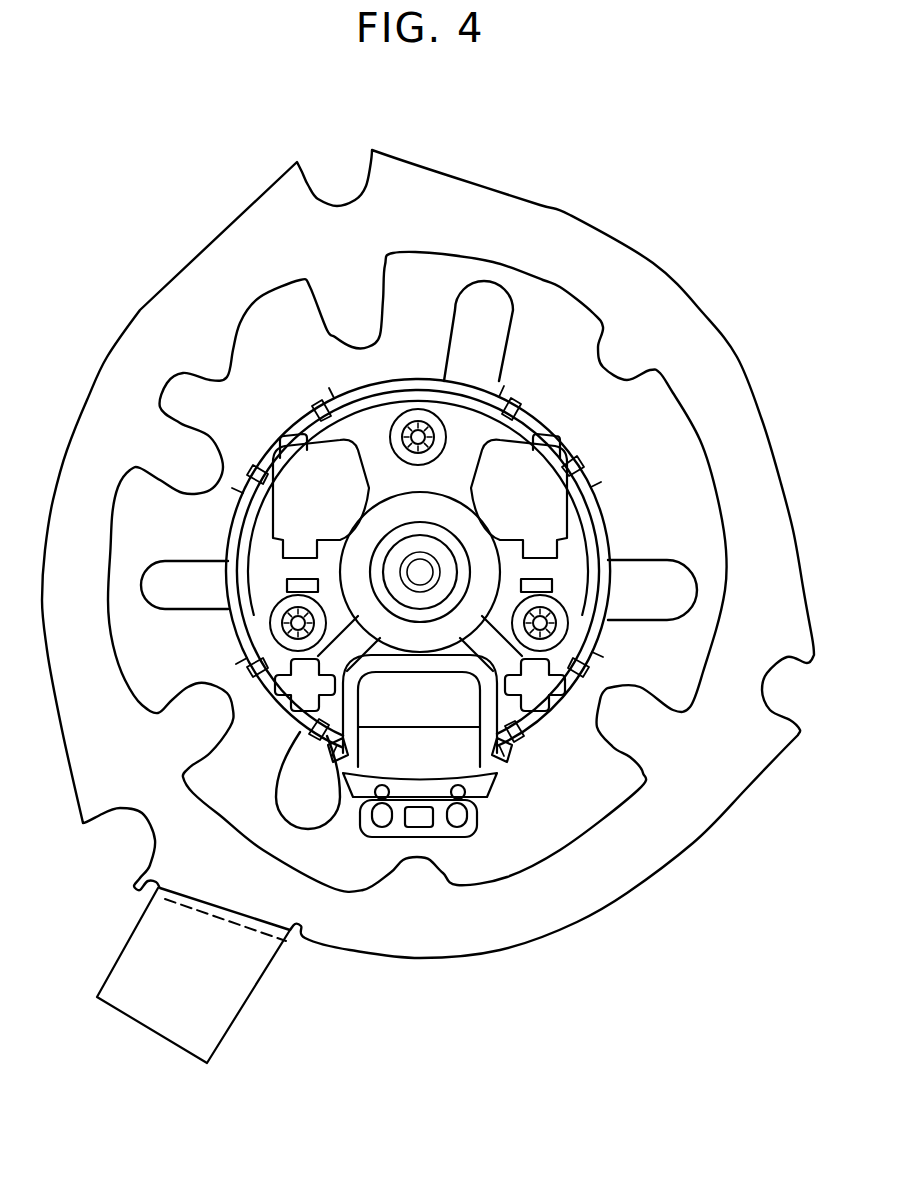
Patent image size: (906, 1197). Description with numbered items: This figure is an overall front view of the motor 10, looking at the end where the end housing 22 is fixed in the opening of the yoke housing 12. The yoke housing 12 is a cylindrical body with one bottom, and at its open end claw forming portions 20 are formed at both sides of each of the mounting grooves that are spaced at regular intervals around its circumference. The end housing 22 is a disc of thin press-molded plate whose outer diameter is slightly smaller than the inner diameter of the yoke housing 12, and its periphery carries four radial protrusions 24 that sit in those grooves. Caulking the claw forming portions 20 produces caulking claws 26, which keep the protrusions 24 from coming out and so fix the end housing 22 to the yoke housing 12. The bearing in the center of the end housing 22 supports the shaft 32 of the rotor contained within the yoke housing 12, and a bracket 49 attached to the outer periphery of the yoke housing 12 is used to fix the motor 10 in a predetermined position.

The motor 10 is at (127, 268).
The yoke housing 12 is at (222, 543).
The claw forming portions 20 is at (333, 393).
The end housing 22 is at (468, 496).
The protrusions 24 is at (273, 453).
The caulking claws 26 is at (313, 410).
The shaft 32 is at (421, 566).
The bracket 49 is at (652, 265).